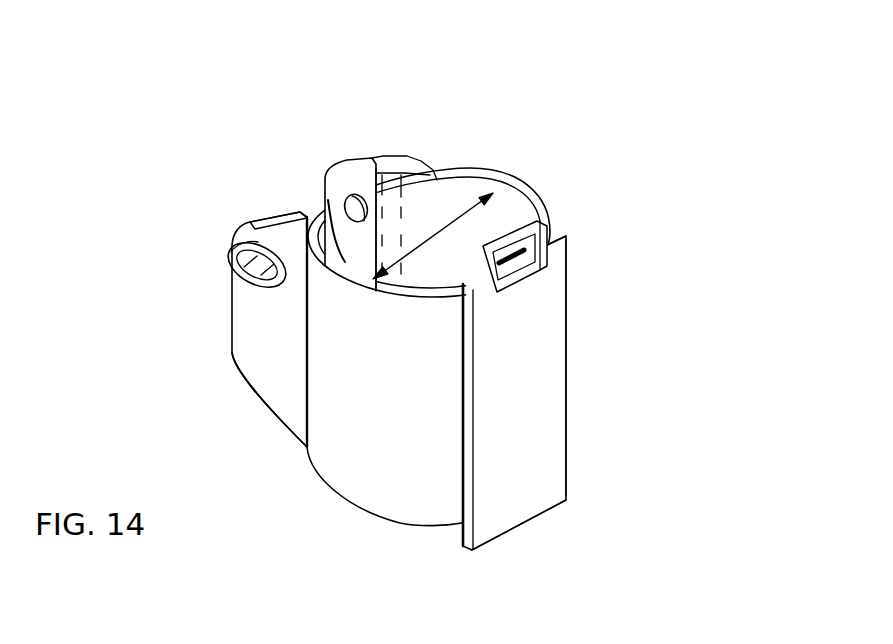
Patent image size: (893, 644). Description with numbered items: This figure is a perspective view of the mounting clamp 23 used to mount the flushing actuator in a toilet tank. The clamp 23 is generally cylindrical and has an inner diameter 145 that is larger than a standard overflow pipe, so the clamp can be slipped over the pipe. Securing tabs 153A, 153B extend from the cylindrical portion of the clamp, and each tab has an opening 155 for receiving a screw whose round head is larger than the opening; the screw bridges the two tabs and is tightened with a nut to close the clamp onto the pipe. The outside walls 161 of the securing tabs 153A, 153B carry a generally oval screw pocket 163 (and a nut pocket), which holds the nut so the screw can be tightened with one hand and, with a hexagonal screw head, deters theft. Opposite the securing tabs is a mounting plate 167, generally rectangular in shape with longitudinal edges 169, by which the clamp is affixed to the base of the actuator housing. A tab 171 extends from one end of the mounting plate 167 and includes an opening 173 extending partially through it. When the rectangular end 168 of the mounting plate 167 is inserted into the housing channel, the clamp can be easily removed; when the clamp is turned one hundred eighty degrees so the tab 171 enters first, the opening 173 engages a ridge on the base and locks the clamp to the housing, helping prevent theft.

The mounting clamp 23 is at (484, 74).
The inner diameter 145 is at (493, 194).
The securing tab 153A is at (222, 333).
The securing tab 153B is at (363, 142).
The opening 155 is at (252, 264).
The outside wall 161 is at (267, 390).
The screw pocket 163 is at (253, 224).
The mounting plate 167 is at (515, 370).
The rectangular end 168 is at (527, 523).
The longitudinal edges 169 is at (466, 437).
The tab 171 is at (543, 218).
The opening 173 is at (562, 234).